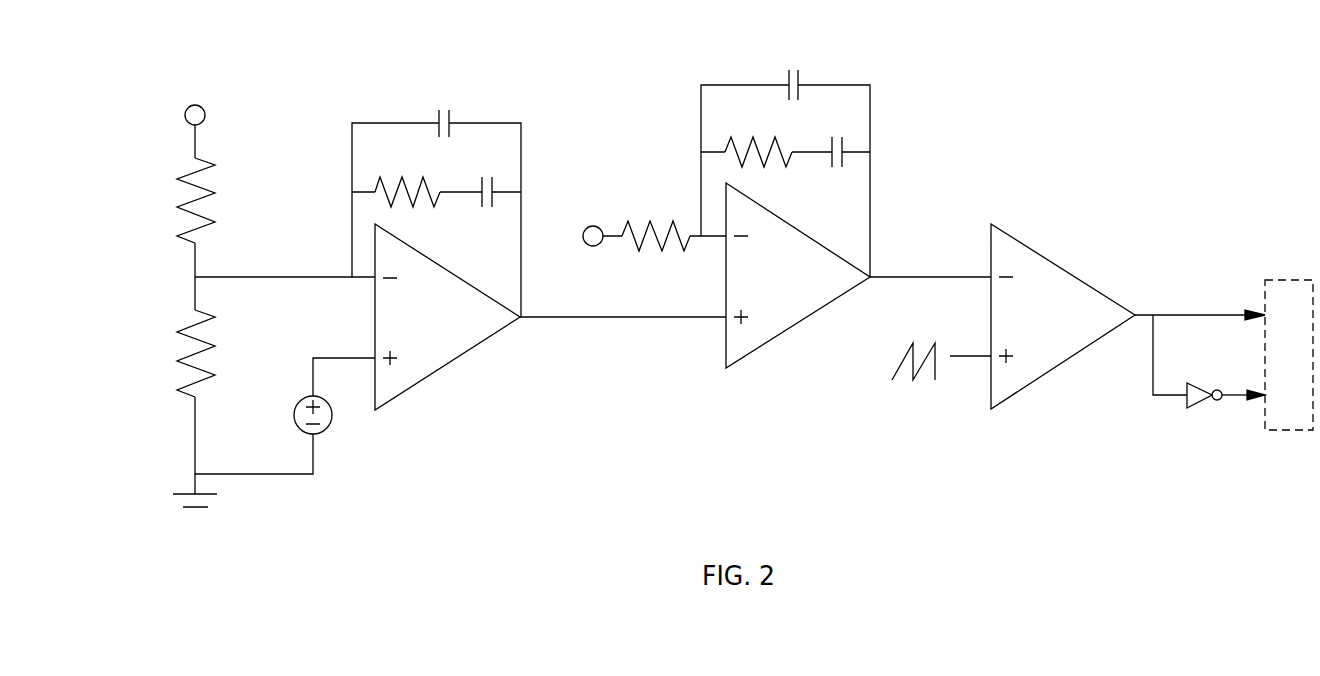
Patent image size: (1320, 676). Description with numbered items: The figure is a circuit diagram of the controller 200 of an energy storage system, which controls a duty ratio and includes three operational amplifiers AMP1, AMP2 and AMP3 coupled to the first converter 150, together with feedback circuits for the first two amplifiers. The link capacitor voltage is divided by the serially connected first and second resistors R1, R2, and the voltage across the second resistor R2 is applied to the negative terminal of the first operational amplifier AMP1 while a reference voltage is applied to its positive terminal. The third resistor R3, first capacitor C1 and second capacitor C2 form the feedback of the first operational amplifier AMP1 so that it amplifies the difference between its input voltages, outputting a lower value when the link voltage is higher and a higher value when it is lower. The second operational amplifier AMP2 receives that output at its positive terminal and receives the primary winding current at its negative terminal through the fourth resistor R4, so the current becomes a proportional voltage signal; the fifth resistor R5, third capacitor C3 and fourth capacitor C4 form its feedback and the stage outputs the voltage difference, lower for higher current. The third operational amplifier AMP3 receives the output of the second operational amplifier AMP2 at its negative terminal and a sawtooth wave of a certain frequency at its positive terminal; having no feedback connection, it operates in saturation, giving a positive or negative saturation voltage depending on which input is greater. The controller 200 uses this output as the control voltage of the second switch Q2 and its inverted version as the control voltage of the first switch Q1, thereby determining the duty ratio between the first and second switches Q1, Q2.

The controller 200 is at (694, 264).
The first converter 150 is at (1289, 325).
The first resistor R1 is at (215, 200).
The second resistor R2 is at (215, 353).
The third resistor R3 is at (407, 175).
The fourth resistor R4 is at (656, 220).
The fifth resistor R5 is at (758, 135).
The first capacitor C1 is at (485, 175).
The second capacitor C2 is at (443, 107).
The third capacitor C3 is at (834, 135).
The fourth capacitor C4 is at (795, 69).
The first operational amplifier AMP1 is at (447, 317).
The second operational amplifier AMP2 is at (798, 275).
The third operational amplifier AMP3 is at (1063, 316).
The first switch Q1 is at (1289, 400).
The second switch Q2 is at (1289, 320).